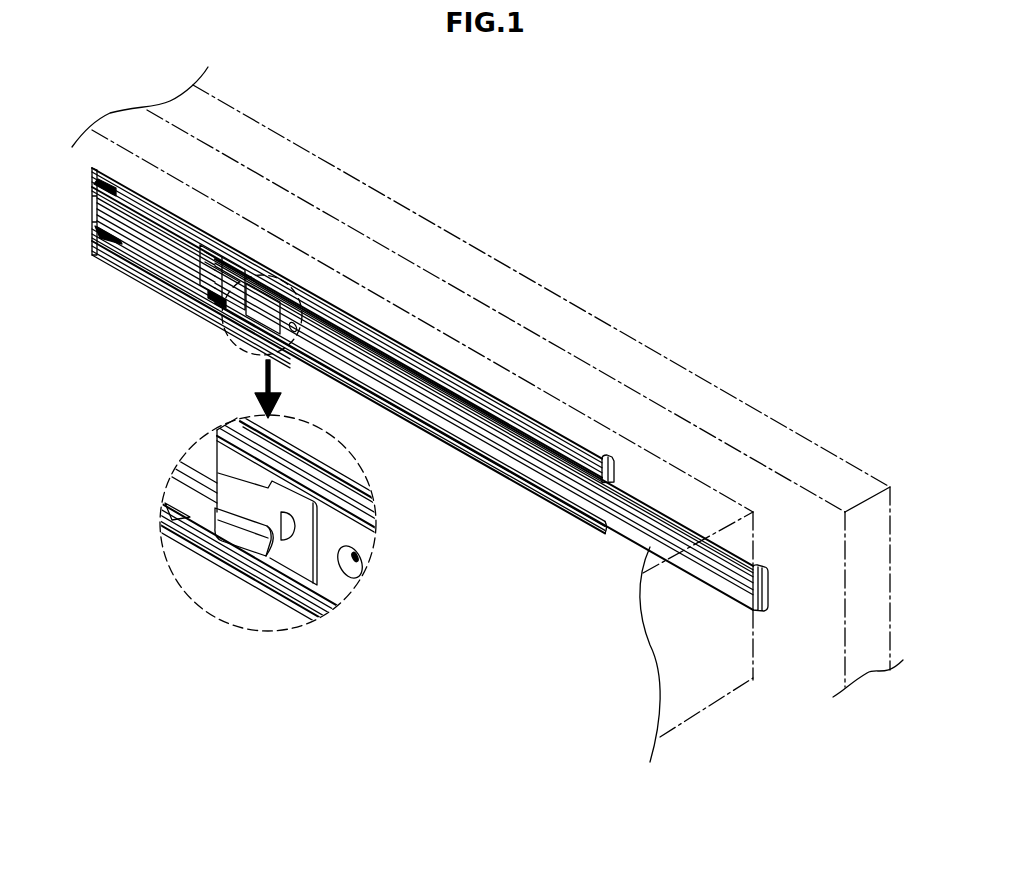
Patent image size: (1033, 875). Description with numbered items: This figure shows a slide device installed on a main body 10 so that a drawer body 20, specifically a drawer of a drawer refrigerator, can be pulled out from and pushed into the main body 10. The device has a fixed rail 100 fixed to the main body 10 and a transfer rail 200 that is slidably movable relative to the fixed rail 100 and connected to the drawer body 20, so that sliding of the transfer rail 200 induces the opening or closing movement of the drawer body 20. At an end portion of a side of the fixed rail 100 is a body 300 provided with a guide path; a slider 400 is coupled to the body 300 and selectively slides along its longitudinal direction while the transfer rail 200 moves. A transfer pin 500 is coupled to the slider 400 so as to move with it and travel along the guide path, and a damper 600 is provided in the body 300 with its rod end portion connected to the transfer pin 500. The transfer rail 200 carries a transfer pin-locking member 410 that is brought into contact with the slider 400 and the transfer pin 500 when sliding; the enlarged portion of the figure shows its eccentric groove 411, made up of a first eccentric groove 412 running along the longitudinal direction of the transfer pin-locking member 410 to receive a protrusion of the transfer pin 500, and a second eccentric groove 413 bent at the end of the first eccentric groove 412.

The main body 10 is at (676, 372).
The drawer body 20 is at (725, 671).
The fixed rail 100 is at (543, 405).
The transfer rail 200 is at (584, 493).
The body 300 is at (131, 217).
The slider 400 is at (213, 248).
The transfer pin-locking member 410 is at (303, 558).
The eccentric groove 411 is at (163, 647).
The first eccentric groove 412 is at (262, 537).
The second eccentric groove 413 is at (270, 557).
The transfer pin 500 is at (212, 292).
The damper 600 is at (122, 250).